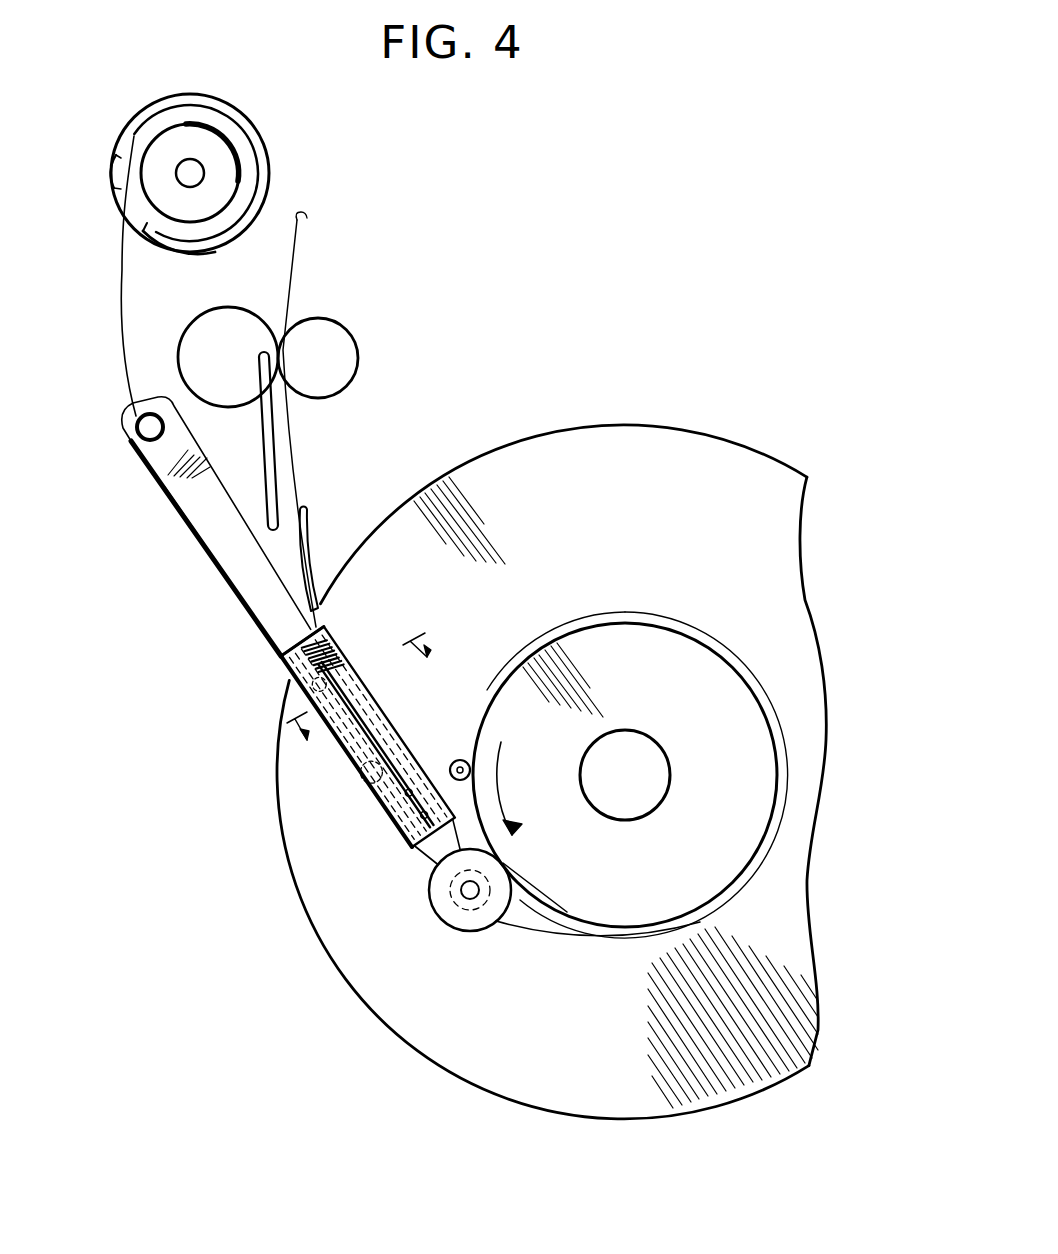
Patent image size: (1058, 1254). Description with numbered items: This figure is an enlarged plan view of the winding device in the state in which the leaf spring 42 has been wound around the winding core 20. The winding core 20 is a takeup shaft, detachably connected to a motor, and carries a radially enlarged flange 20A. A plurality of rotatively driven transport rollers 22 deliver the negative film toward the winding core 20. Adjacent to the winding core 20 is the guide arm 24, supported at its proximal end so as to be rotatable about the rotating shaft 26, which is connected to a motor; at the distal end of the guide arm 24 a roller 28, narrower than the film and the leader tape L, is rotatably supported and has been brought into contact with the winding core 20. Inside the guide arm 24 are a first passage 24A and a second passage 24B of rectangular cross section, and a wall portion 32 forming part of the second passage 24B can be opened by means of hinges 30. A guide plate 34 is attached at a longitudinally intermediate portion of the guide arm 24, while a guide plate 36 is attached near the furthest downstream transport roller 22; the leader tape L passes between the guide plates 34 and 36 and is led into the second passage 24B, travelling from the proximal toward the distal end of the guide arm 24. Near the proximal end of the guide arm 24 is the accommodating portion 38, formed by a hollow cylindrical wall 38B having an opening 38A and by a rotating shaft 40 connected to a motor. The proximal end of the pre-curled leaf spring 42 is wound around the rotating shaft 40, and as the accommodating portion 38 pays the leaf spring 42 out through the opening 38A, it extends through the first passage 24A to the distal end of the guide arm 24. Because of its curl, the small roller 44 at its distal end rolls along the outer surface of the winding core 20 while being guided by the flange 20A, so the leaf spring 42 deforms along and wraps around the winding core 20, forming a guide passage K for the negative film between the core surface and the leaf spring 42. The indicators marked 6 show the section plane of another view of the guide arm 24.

The winding core 20 is at (700, 640).
The flange 20A is at (705, 428).
The transport rollers 22 is at (213, 308).
The guide arm 24 is at (250, 625).
The first passage 24A is at (390, 795).
The second passage 24B is at (372, 702).
The rotating shaft 26 is at (140, 443).
The roller 28 is at (450, 920).
The hinges 30 is at (322, 650).
The wall portion 32 is at (372, 665).
The guide plate 34 is at (310, 527).
The guide plate 36 is at (262, 445).
The accommodating portion 38 is at (268, 142).
The opening 38A is at (117, 190).
The hollow cylindrical wall 38B is at (186, 96).
The rotating shaft 40 is at (205, 150).
The leaf spring 42 is at (120, 300).
The small roller 44 is at (452, 765).
The section line 6 is at (369, 704).
The guide passage K is at (733, 888).
The leader tape L is at (300, 270).